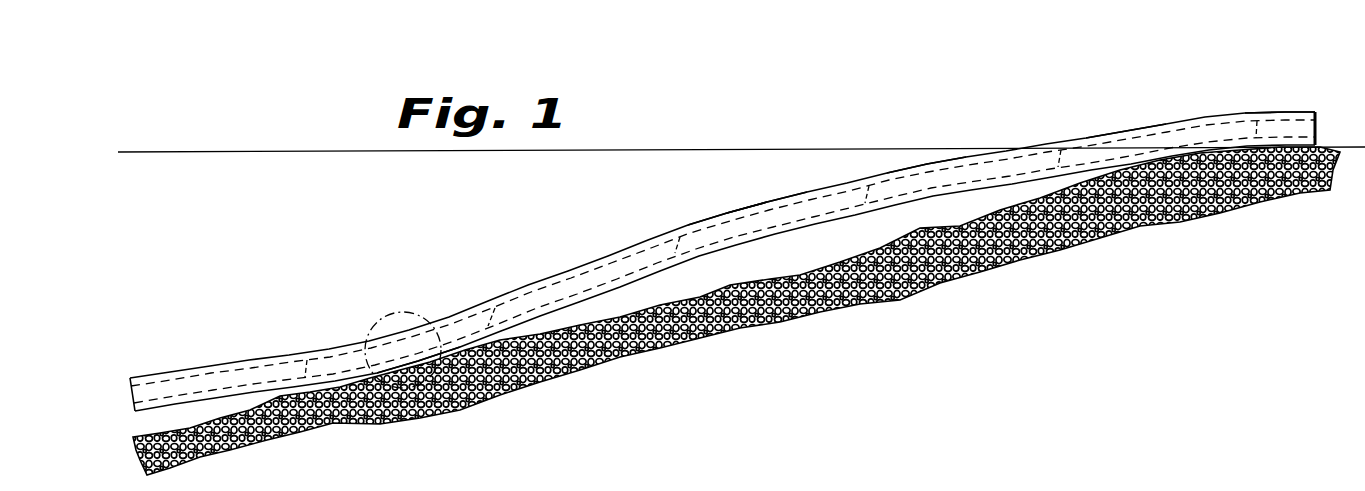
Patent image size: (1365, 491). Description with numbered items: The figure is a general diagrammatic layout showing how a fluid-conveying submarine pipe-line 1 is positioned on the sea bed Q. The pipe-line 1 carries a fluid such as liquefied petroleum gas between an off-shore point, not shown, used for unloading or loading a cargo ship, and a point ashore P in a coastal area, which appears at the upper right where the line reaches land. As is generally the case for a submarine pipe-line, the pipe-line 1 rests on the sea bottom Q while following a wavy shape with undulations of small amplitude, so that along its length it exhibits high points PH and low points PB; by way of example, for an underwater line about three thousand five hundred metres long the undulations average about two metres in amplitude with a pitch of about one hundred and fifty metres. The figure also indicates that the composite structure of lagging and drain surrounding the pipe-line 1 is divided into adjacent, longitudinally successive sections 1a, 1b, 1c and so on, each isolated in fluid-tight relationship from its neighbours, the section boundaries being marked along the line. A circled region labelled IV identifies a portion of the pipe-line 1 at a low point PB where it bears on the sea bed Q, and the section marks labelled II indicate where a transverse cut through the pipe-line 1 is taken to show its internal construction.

The submarine pipe-line 1 is at (1326, 104).
The section of the composite structure 1a is at (1121, 127).
The section of the composite structure 1b is at (919, 163).
The section of the composite structure 1c is at (709, 217).
The point on land P is at (1285, 103).
The high point PH is at (776, 198).
The low point PB is at (433, 378).
The sea bed Q is at (975, 258).
The detail circle IV is at (368, 314).
The section line II is at (763, 192).